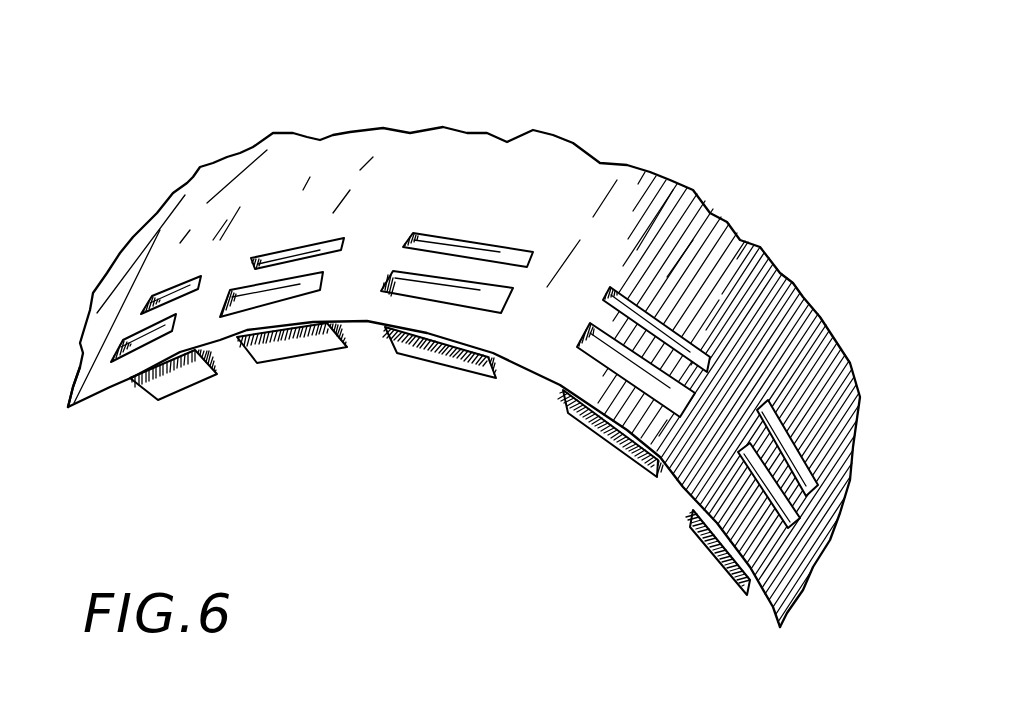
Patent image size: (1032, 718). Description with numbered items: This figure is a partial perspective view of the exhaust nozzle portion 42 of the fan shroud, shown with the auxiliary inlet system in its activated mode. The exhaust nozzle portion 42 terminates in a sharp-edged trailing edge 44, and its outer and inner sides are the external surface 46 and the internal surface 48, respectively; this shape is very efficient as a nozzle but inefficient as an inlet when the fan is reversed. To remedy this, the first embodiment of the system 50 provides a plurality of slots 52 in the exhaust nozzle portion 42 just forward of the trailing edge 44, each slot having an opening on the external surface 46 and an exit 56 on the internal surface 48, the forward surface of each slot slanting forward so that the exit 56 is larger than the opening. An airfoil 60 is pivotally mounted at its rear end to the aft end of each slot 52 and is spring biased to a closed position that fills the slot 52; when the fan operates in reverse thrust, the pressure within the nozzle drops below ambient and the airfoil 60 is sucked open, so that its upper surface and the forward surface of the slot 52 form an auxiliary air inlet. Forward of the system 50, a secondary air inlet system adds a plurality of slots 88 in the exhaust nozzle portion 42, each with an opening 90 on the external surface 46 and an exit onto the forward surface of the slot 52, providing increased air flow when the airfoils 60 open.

The exhaust nozzle portion 42 is at (447, 99).
The trailing edge 44 is at (82, 408).
The external surface 46 is at (247, 180).
The internal surface 48 is at (112, 389).
The system 50 is at (157, 142).
The slots 52 is at (133, 340).
The exit 56 is at (220, 370).
The airfoil 60 is at (181, 389).
The slots 88 is at (158, 300).
The opening 90 is at (146, 300).